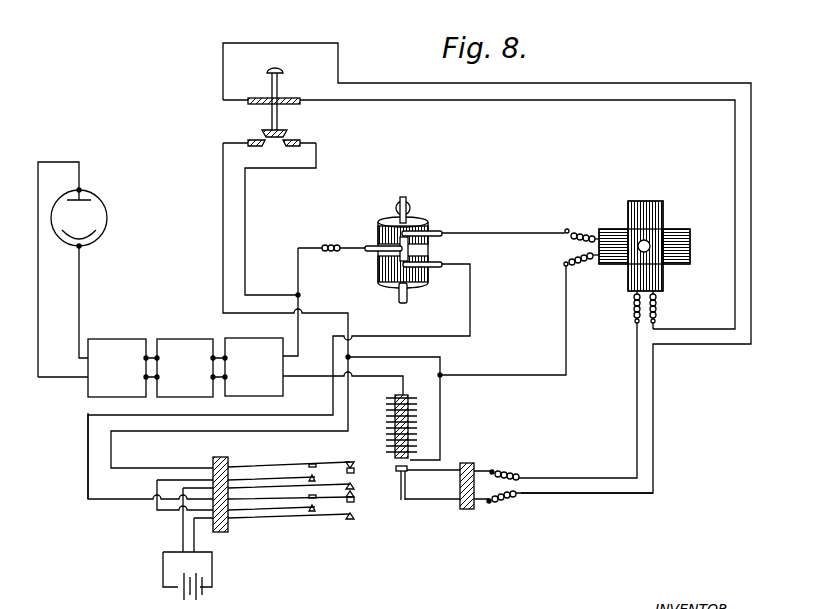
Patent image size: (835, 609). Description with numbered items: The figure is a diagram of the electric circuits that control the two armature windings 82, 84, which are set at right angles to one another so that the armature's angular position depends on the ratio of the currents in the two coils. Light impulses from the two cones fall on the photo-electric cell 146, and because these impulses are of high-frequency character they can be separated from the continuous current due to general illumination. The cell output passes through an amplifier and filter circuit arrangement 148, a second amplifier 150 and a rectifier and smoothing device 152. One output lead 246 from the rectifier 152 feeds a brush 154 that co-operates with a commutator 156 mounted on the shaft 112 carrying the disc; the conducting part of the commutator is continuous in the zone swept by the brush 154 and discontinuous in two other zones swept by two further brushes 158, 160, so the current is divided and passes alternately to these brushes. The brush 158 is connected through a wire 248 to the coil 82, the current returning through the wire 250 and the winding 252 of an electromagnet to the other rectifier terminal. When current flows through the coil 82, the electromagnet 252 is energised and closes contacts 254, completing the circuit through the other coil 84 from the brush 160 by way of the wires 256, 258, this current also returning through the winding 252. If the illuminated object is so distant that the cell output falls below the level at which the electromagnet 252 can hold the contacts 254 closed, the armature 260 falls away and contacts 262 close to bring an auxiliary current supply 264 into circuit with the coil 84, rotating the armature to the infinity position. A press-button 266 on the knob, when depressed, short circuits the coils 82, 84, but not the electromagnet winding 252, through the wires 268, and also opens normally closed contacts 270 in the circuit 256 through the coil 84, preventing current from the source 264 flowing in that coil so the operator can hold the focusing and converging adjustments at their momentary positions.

The winding 82 is at (612, 240).
The winding 84 is at (645, 228).
The shaft 112 is at (403, 198).
The photo-electric cell 146 is at (100, 218).
The amplifier and filter circuit arrangement 148 is at (97, 388).
The second amplifier 150 is at (175, 350).
The rectifier and smoothing device 152 is at (243, 355).
The brush 154 is at (370, 246).
The commutator 156 is at (420, 250).
The brush 158 is at (436, 231).
The brush 160 is at (431, 270).
The output lead 246 is at (292, 352).
The wire 248 is at (536, 232).
The wire 250 is at (517, 374).
The electromagnet winding 252 is at (410, 425).
The contacts 254 is at (358, 470).
The wire 256 is at (703, 346).
The wire 258 is at (398, 397).
The armature 260 is at (408, 472).
The contacts 262 is at (349, 510).
The auxiliary current supply 264 is at (163, 576).
The press-button 266 is at (270, 68).
The wires 268 is at (223, 212).
The normally closed contacts 270 is at (240, 108).